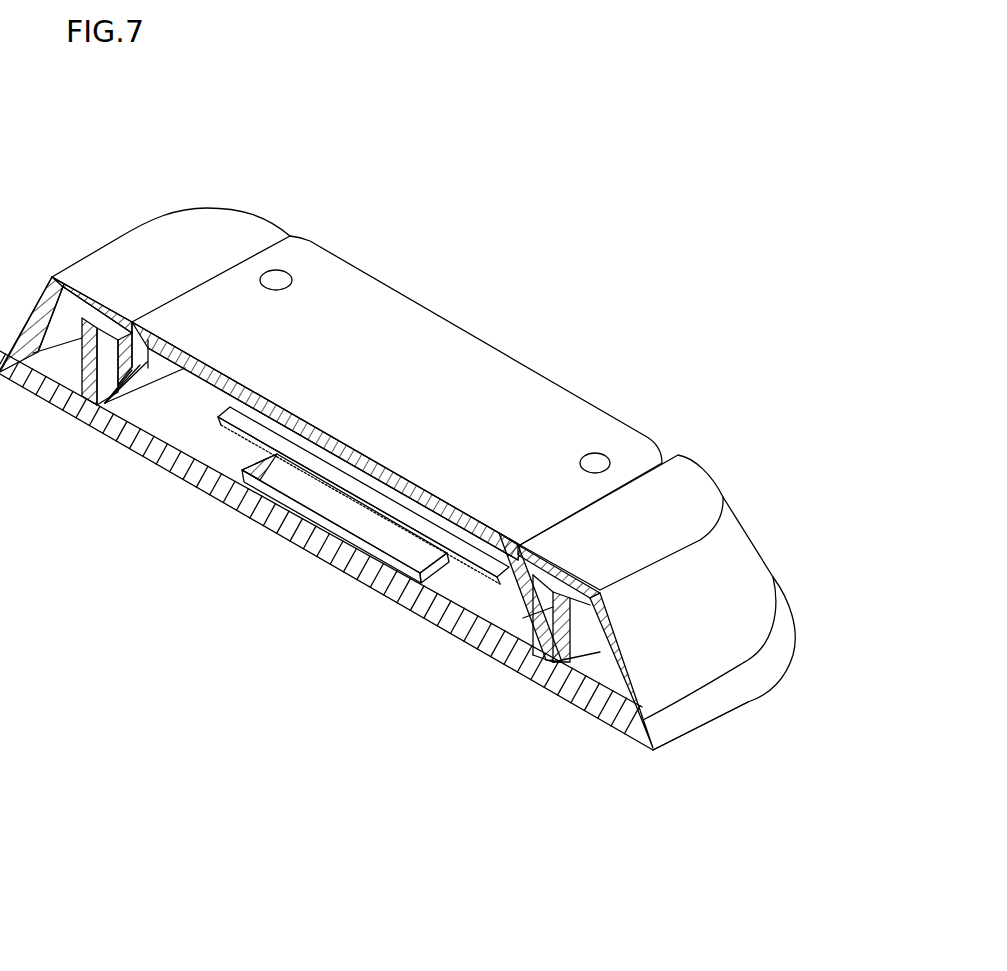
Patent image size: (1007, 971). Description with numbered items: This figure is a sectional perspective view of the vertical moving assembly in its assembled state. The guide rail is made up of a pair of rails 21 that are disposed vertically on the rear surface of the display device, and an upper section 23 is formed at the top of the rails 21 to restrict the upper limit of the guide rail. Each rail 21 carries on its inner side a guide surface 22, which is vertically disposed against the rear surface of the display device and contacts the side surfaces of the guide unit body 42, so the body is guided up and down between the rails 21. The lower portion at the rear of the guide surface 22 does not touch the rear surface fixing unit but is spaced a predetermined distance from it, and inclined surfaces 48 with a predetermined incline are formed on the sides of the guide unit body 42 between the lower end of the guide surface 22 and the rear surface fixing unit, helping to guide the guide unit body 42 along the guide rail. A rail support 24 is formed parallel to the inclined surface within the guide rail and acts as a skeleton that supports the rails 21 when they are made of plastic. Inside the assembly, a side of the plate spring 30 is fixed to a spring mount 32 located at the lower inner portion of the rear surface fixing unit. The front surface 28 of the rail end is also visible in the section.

The rails 21 is at (138, 250).
The guide surface 22 is at (520, 543).
The upper section 23 is at (683, 607).
The rail support 24 is at (577, 643).
The front surface 28 is at (693, 707).
The plate spring 30 is at (233, 430).
The spring mount 32 is at (353, 513).
The guide unit body 42 is at (421, 337).
The inclined surfaces 48 is at (482, 670).